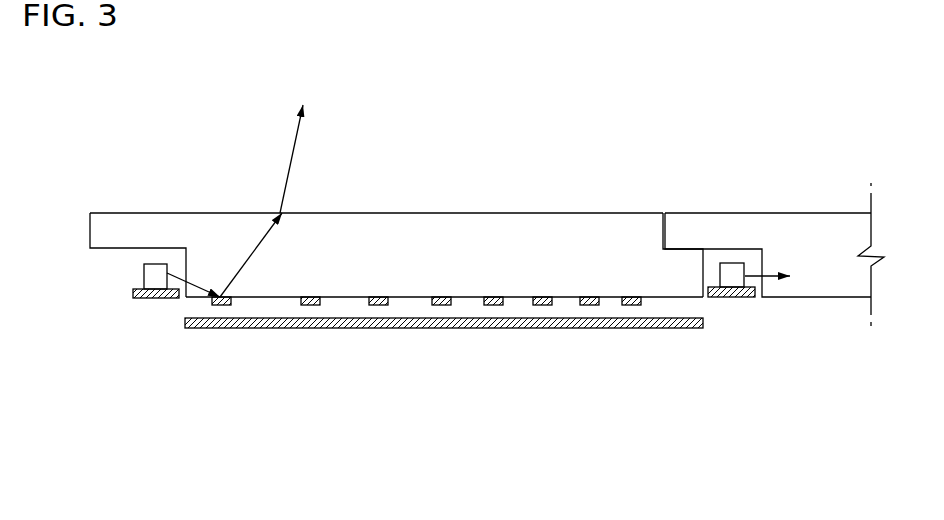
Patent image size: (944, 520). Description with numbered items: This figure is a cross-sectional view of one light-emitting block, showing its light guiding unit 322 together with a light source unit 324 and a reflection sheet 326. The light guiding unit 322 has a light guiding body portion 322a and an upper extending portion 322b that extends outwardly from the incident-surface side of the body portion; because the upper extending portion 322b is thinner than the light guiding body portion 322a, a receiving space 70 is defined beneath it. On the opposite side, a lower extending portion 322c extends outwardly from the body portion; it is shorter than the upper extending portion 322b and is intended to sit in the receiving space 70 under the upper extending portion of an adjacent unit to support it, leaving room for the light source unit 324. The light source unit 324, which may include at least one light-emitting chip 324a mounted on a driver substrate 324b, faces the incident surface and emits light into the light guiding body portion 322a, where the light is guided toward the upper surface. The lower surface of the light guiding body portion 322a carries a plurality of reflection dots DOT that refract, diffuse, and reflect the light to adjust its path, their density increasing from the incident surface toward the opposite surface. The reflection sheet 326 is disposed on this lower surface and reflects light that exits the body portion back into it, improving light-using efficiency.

The light guiding unit 322 is at (486, 203).
The light guiding body portion 322a is at (402, 288).
The upper extending portion 322b is at (140, 228).
The lower extending portion 322c is at (685, 288).
The receiving space 70 is at (703, 272).
The light source unit 324 is at (136, 366).
The light-emitting chip 324a is at (158, 278).
The driver substrate 324b is at (139, 298).
The reflection dots DOT is at (311, 305).
The reflection sheet 326 is at (497, 328).